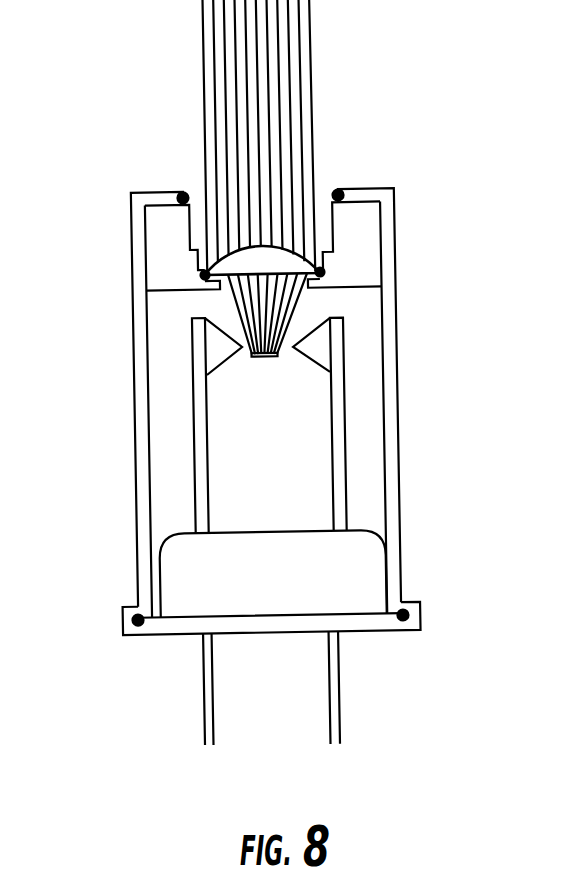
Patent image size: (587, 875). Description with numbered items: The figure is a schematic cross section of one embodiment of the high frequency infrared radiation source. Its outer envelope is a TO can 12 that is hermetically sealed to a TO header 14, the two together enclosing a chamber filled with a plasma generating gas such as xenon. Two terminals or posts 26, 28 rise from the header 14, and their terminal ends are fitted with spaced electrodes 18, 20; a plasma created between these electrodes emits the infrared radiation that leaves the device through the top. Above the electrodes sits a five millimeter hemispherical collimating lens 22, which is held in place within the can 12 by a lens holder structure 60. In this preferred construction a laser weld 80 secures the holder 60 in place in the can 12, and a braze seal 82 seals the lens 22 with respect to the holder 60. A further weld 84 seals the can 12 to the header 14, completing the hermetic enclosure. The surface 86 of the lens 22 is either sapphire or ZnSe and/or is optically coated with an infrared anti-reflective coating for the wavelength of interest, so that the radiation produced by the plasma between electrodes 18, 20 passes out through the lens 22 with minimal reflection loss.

The TO can 12 is at (400, 432).
The TO header 14 is at (165, 626).
The electrode 18 is at (219, 355).
The electrode 20 is at (318, 355).
The collimating lens 22 is at (290, 257).
The post 26 is at (340, 465).
The post 28 is at (198, 450).
The lens holder structure 60 is at (158, 257).
The laser weld 80 is at (338, 195).
The braze seal 82 is at (205, 277).
The weld 84 is at (53, 660).
The surface of lens 86 is at (238, 277).